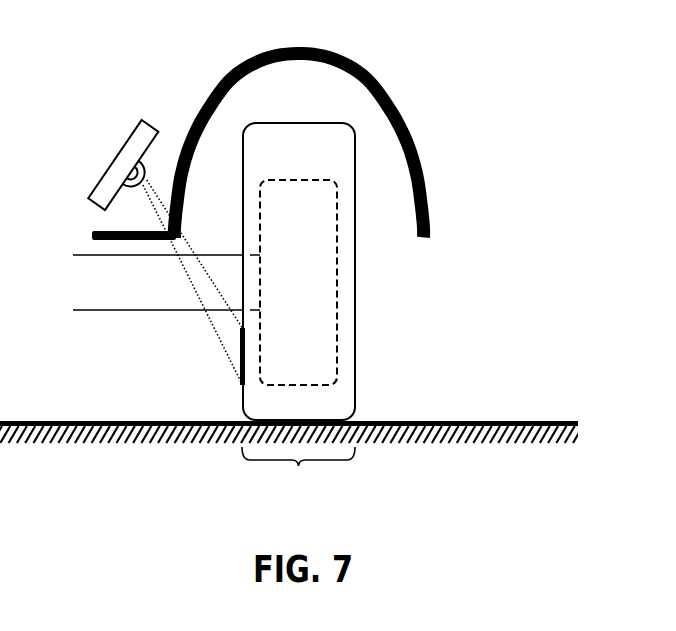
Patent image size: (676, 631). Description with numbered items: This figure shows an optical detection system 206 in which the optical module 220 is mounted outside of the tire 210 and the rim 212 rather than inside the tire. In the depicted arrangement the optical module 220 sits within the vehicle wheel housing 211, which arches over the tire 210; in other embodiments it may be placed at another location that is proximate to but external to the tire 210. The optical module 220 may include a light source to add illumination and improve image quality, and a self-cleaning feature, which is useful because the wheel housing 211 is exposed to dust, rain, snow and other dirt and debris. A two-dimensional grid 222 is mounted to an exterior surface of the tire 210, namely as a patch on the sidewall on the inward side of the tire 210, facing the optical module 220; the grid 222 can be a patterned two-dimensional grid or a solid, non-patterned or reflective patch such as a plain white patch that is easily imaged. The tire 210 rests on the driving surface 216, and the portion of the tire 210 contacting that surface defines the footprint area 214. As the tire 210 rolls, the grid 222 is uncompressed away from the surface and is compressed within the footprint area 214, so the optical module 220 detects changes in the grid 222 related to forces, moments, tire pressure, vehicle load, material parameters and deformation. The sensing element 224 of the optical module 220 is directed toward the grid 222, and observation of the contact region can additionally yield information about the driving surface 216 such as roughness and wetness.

The optical detection system 206 is at (112, 355).
The tire 210 is at (355, 223).
The vehicle wheel housing 211 is at (380, 83).
The rim 212 is at (337, 280).
The footprint area 214 is at (298, 473).
The driving surface 216 is at (526, 422).
The optical module 220 is at (138, 143).
The two-dimensional grid 222 is at (240, 382).
The sensor head 224 is at (146, 163).